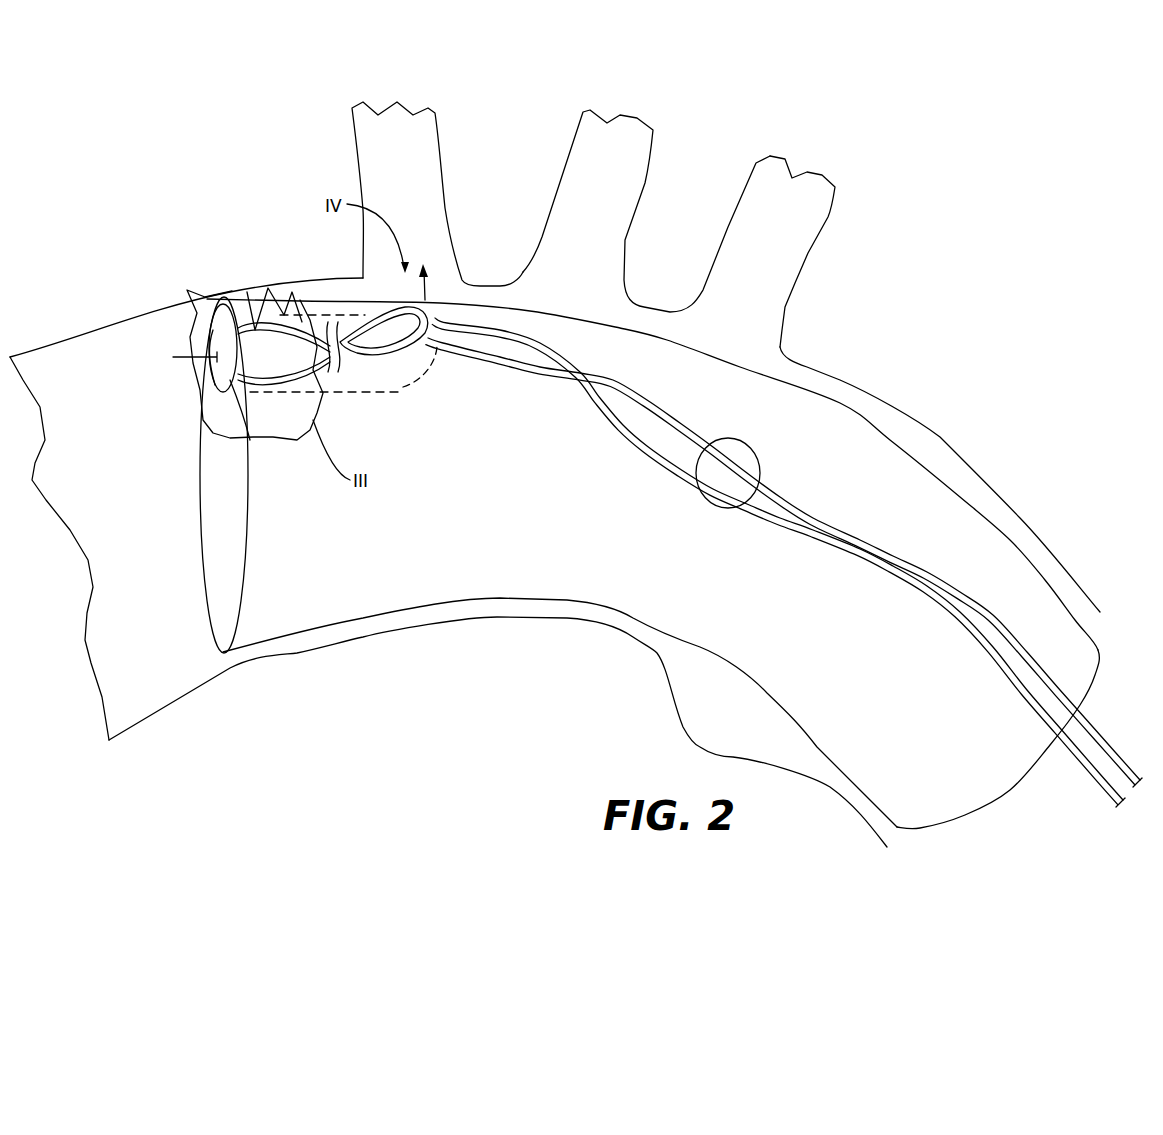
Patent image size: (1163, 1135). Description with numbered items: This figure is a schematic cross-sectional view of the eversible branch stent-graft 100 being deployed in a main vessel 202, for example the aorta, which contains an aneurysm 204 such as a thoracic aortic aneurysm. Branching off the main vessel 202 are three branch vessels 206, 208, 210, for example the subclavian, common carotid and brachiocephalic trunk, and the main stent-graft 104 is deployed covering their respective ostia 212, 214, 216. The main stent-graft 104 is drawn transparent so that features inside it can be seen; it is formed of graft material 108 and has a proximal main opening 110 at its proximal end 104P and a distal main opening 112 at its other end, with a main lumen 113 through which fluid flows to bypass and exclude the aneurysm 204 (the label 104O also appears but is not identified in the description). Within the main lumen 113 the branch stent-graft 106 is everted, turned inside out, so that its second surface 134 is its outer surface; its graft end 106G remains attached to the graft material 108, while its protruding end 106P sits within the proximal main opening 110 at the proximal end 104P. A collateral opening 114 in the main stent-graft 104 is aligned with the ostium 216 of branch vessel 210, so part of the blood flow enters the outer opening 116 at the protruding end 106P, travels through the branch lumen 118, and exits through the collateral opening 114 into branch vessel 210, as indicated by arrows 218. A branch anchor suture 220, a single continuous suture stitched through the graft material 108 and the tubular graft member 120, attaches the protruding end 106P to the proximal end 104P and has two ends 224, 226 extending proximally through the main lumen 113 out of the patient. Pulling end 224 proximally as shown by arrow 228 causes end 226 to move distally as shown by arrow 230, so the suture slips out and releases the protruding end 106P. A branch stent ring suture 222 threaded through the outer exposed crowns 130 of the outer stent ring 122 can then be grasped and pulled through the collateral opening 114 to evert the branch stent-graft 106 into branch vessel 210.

The eversible branch stent-graft 100 is at (846, 399).
The main stent-graft 104 is at (568, 607).
The vessel cut end (distal) 104O is at (1000, 797).
The proximal end of main stent-graft 104P is at (205, 613).
The branch stent-graft 106 is at (437, 367).
The graft end of branch stent-graft 106G is at (465, 282).
The protruding end of branch stent-graft 106P is at (245, 400).
The graft material of main stent-graft 108 is at (647, 620).
The proximal main opening 110 is at (216, 495).
The distal main opening 112 is at (1050, 746).
The main lumen 113 is at (560, 560).
The collateral opening 114 is at (386, 300).
The outer opening 116 is at (203, 297).
The branch lumen 118 is at (227, 397).
The tubular graft member 120 is at (333, 395).
The outer stent ring 122 is at (240, 380).
The outer exposed crowns 130 is at (283, 298).
The second surface 134 is at (403, 386).
The main vessel 202 is at (97, 385).
The aneurysm 204 is at (750, 731).
The branch vessel 206 is at (799, 220).
The branch vessel 208 is at (622, 171).
The branch vessel 210 is at (410, 160).
The ostium 212 is at (760, 318).
The ostium 214 is at (603, 273).
The ostium 216 is at (417, 263).
The arrows 218 is at (178, 360).
The branch anchor suture 220 is at (235, 293).
The branch stent ring suture 222 is at (435, 368).
The end of branch anchor suture 224 is at (1120, 803).
The end of branch anchor suture 226 is at (1138, 786).
The arrow 228 is at (986, 694).
The arrow 230 is at (1012, 610).